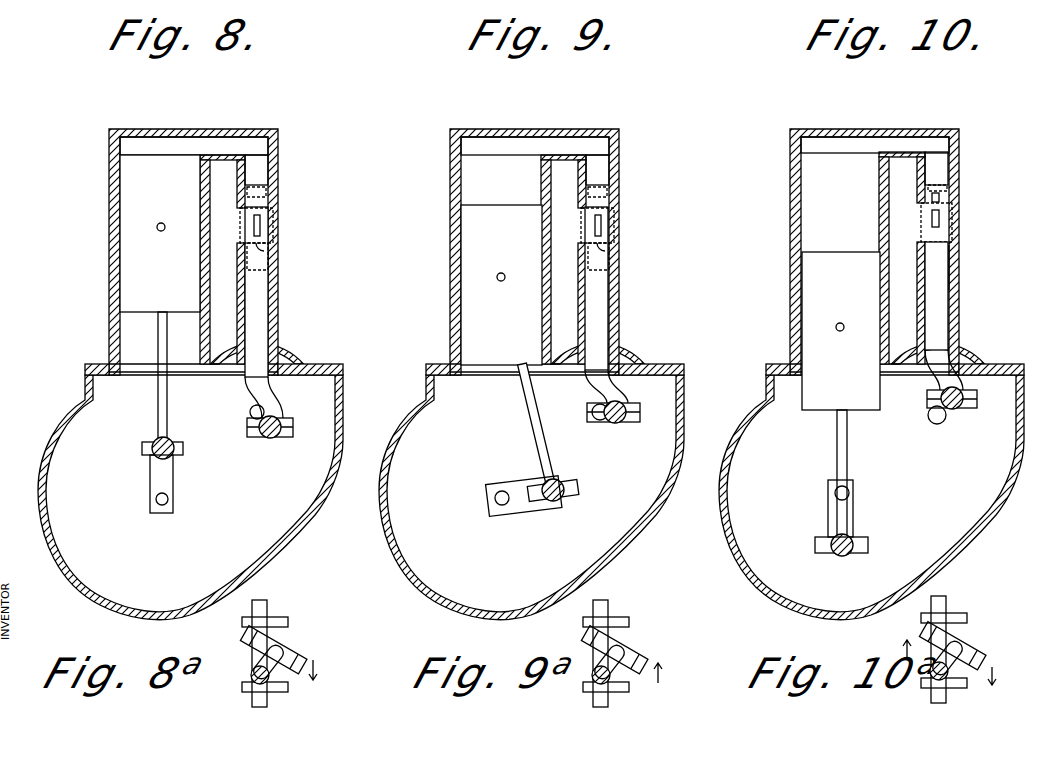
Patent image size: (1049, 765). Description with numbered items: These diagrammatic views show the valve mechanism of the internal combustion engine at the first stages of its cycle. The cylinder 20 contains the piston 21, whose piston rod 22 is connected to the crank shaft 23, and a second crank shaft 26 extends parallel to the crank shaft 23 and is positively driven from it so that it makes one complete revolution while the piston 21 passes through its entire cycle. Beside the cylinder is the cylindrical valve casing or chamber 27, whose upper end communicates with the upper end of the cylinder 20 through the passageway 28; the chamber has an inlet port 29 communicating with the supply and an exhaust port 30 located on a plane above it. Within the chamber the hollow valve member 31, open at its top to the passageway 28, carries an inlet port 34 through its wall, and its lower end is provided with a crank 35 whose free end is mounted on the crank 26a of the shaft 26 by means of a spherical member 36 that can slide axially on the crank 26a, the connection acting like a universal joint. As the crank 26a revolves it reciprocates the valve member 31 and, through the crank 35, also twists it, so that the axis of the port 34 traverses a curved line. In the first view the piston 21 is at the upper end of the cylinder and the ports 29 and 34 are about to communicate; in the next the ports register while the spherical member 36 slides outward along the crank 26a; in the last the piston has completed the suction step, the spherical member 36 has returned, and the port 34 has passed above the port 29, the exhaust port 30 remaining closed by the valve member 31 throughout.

In FIG. 8, the cylinder 20 is at (109, 250).
In FIG. 9, the cylinder 20 is at (539, 252).
In FIG. 10, the cylinder 20 is at (889, 252).
In FIG. 8, the piston 21 is at (160, 233).
In FIG. 9, the piston 21 is at (501, 285).
In FIG. 10, the piston 21 is at (841, 331).
In FIG. 8, the piston rod 22 is at (158, 402).
In FIG. 9, the piston rod 22 is at (521, 432).
In FIG. 10, the piston rod 22 is at (817, 483).
In FIG. 8, the crank shaft 23 is at (157, 498).
In FIG. 9, the crank shaft 23 is at (488, 496).
In FIG. 10, the crank shaft 23 is at (801, 508).
In FIG. 8, the crank shaft 26 is at (247, 415).
In FIG. 8A, the crank shaft 26 is at (260, 602).
In FIG. 9, the crank shaft 26 is at (613, 438).
In FIG. 9A, the crank shaft 26 is at (618, 640).
In FIG. 10, the crank shaft 26 is at (927, 429).
In FIG. 10A, the crank shaft 26 is at (959, 639).
In FIG. 8, the crank 26a is at (252, 403).
In FIG. 8A, the crank 26a is at (285, 620).
In FIG. 9, the crank 26a is at (575, 396).
In FIG. 9A, the crank 26a is at (640, 633).
In FIG. 10, the crank 26a is at (914, 450).
In FIG. 10A, the crank 26a is at (975, 637).
In FIG. 8, the valve casing or chamber 27 is at (278, 193).
In FIG. 9, the valve casing or chamber 27 is at (626, 201).
In FIG. 10, the valve casing or chamber 27 is at (977, 267).
In FIG. 8, the passageway 28 is at (190, 143).
In FIG. 9, the passageway 28 is at (535, 121).
In FIG. 10, the passageway 28 is at (875, 118).
In FIG. 8, the port 29 is at (260, 223).
In FIG. 9, the port 29 is at (623, 225).
In FIG. 10, the port 29 is at (963, 222).
In FIG. 8, the exhaust port 30 is at (267, 182).
In FIG. 9, the exhaust port 30 is at (625, 170).
In FIG. 10, the exhaust port 30 is at (970, 168).
In FIG. 8, the valve member 31 is at (260, 305).
In FIG. 9, the valve member 31 is at (623, 288).
In FIG. 10, the valve member 31 is at (960, 296).
In FIG. 8, the inlet port 34 is at (272, 257).
In FIG. 9, the inlet port 34 is at (626, 256).
In FIG. 10, the inlet port 34 is at (967, 195).
In FIG. 8, the crank 35 is at (270, 387).
In FIG. 8A, the crank 35 is at (280, 650).
In FIG. 9, the crank 35 is at (636, 363).
In FIG. 9A, the crank 35 is at (638, 654).
In FIG. 10, the crank 35 is at (970, 356).
In FIG. 10A, the crank 35 is at (981, 653).
In FIG. 8A, the spherical member 36 is at (287, 640).
In FIG. 9A, the spherical member 36 is at (679, 644).
In FIG. 10A, the spherical member 36 is at (968, 673).